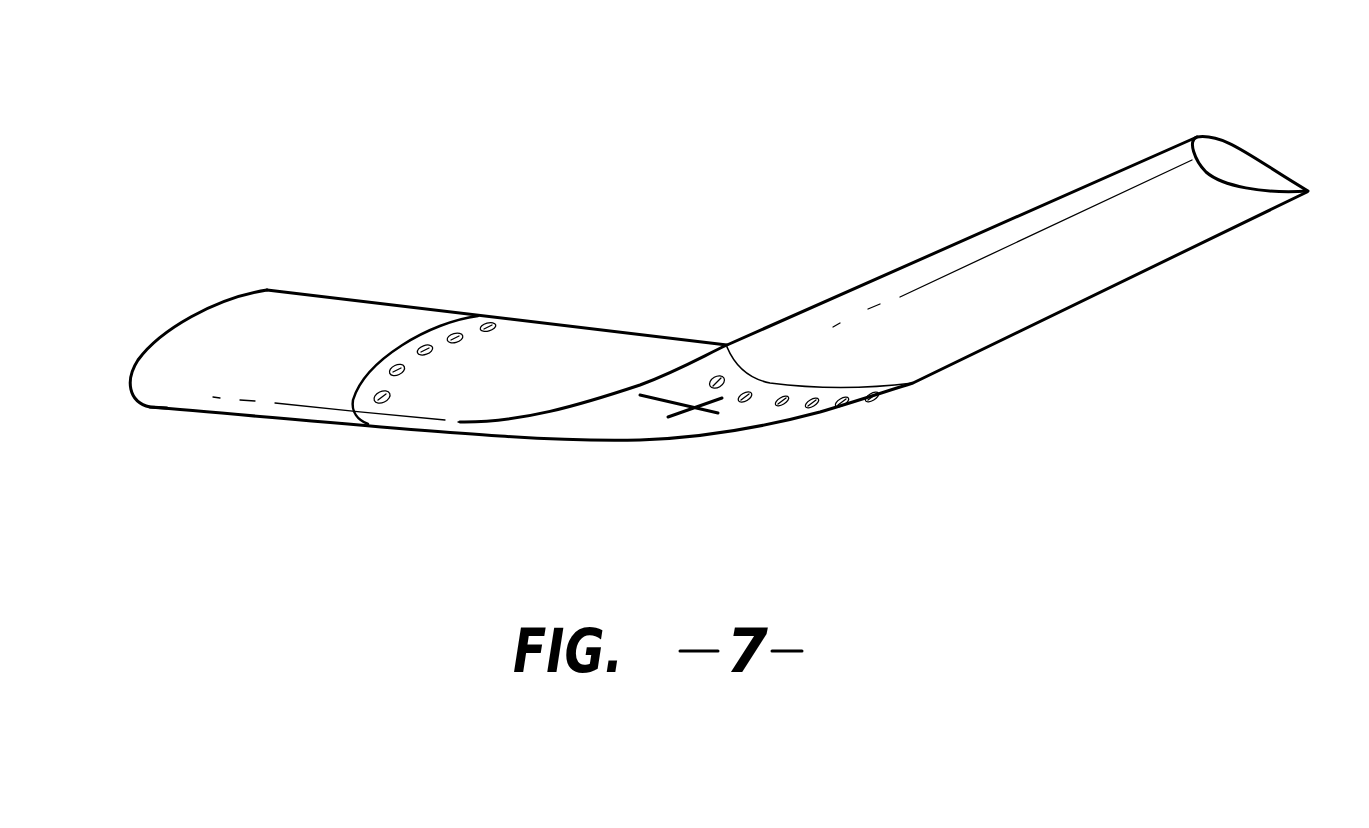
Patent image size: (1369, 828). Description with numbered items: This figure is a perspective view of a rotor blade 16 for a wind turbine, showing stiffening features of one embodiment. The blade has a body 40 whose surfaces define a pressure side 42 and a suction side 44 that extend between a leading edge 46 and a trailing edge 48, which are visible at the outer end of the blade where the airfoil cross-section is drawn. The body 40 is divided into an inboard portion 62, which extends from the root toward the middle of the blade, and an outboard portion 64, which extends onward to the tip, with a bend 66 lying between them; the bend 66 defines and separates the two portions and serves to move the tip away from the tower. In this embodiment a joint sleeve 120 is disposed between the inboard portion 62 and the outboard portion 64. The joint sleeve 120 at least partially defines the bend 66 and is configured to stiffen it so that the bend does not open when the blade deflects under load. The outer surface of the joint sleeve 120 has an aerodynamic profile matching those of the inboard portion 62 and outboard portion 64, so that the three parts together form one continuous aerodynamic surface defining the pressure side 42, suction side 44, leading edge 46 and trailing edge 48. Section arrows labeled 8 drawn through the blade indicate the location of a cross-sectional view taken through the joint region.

The section line 8- 8 is at (323, 310).
The rotor blade 16 is at (521, 193).
The body 40 is at (199, 358).
The pressure side 42 is at (1257, 165).
The suction side 44 is at (1227, 182).
The leading edge 46 is at (1208, 132).
The trailing edge 48 is at (1310, 188).
The inboard portion 62 is at (288, 281).
The outboard portion 64 is at (1066, 176).
The bend 66 is at (662, 328).
The joint sleeve 120 is at (628, 418).